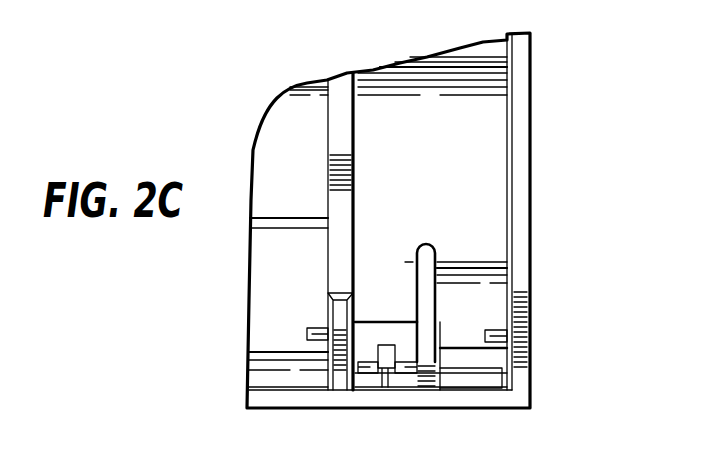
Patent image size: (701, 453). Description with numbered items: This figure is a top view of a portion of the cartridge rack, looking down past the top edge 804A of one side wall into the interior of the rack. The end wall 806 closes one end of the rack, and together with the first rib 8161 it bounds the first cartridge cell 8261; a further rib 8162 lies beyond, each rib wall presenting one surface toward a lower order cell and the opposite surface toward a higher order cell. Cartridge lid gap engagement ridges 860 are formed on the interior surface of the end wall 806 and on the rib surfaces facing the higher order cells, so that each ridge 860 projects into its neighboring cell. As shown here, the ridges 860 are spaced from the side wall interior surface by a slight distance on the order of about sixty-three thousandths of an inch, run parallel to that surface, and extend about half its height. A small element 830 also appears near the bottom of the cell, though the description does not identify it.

The end wall 806 is at (535, 155).
The top edge of side wall 804A is at (385, 400).
The cartridge cell 8261 is at (385, 110).
The rib 8161 is at (432, 265).
The rib 8162 is at (340, 316).
The connector block 830 is at (383, 343).
The cartridge lid gap engagement ridge 860 is at (307, 333).